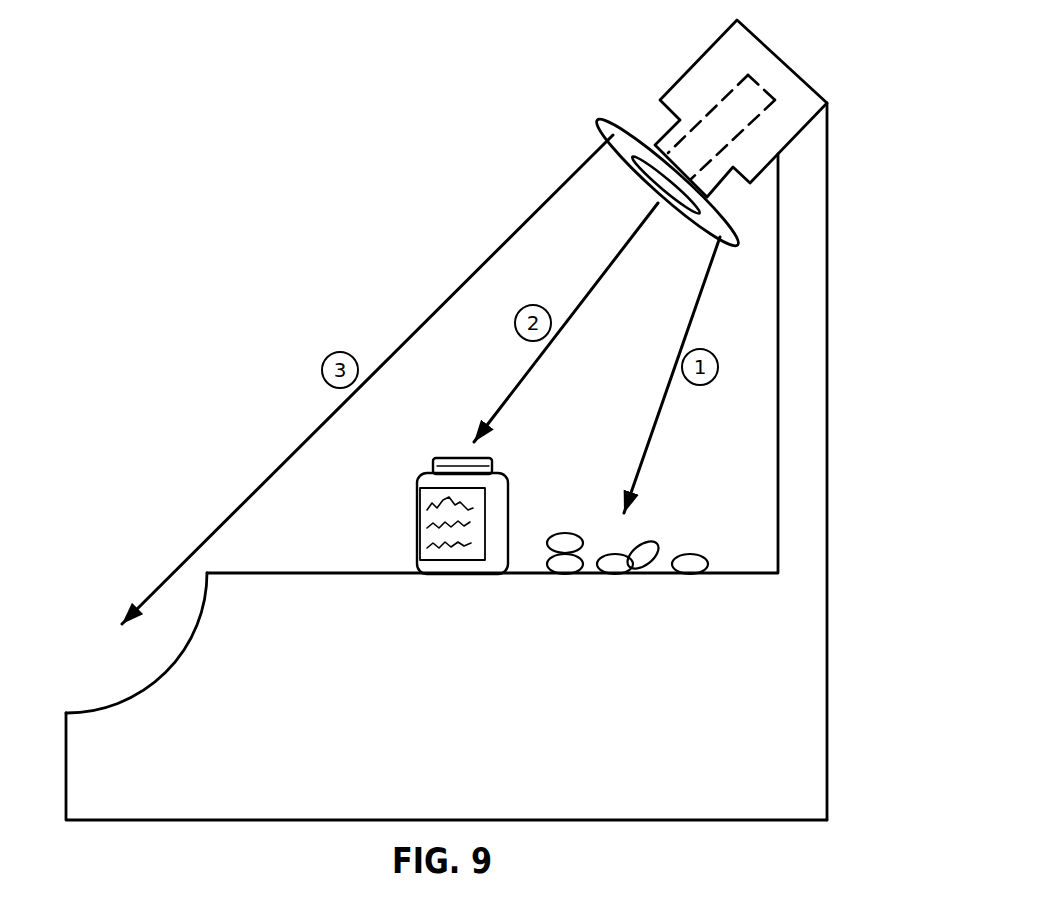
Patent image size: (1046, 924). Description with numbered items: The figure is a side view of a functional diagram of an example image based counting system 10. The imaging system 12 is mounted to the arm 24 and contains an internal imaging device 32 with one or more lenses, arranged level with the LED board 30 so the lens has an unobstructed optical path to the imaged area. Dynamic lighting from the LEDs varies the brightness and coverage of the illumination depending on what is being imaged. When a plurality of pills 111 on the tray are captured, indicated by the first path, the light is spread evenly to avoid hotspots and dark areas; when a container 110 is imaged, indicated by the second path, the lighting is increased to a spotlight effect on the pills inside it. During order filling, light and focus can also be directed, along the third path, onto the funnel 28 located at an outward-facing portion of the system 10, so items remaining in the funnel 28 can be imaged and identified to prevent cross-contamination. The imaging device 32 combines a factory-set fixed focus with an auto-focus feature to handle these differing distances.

The image based counting system 10 is at (400, 146).
The imaging system 12 is at (667, 92).
The arm 24 is at (827, 418).
The dispensing funnel 28 is at (117, 698).
The LED board 30 is at (597, 119).
The internal imaging device 32 is at (747, 77).
The container 110 is at (417, 540).
The pills 111 is at (648, 545).